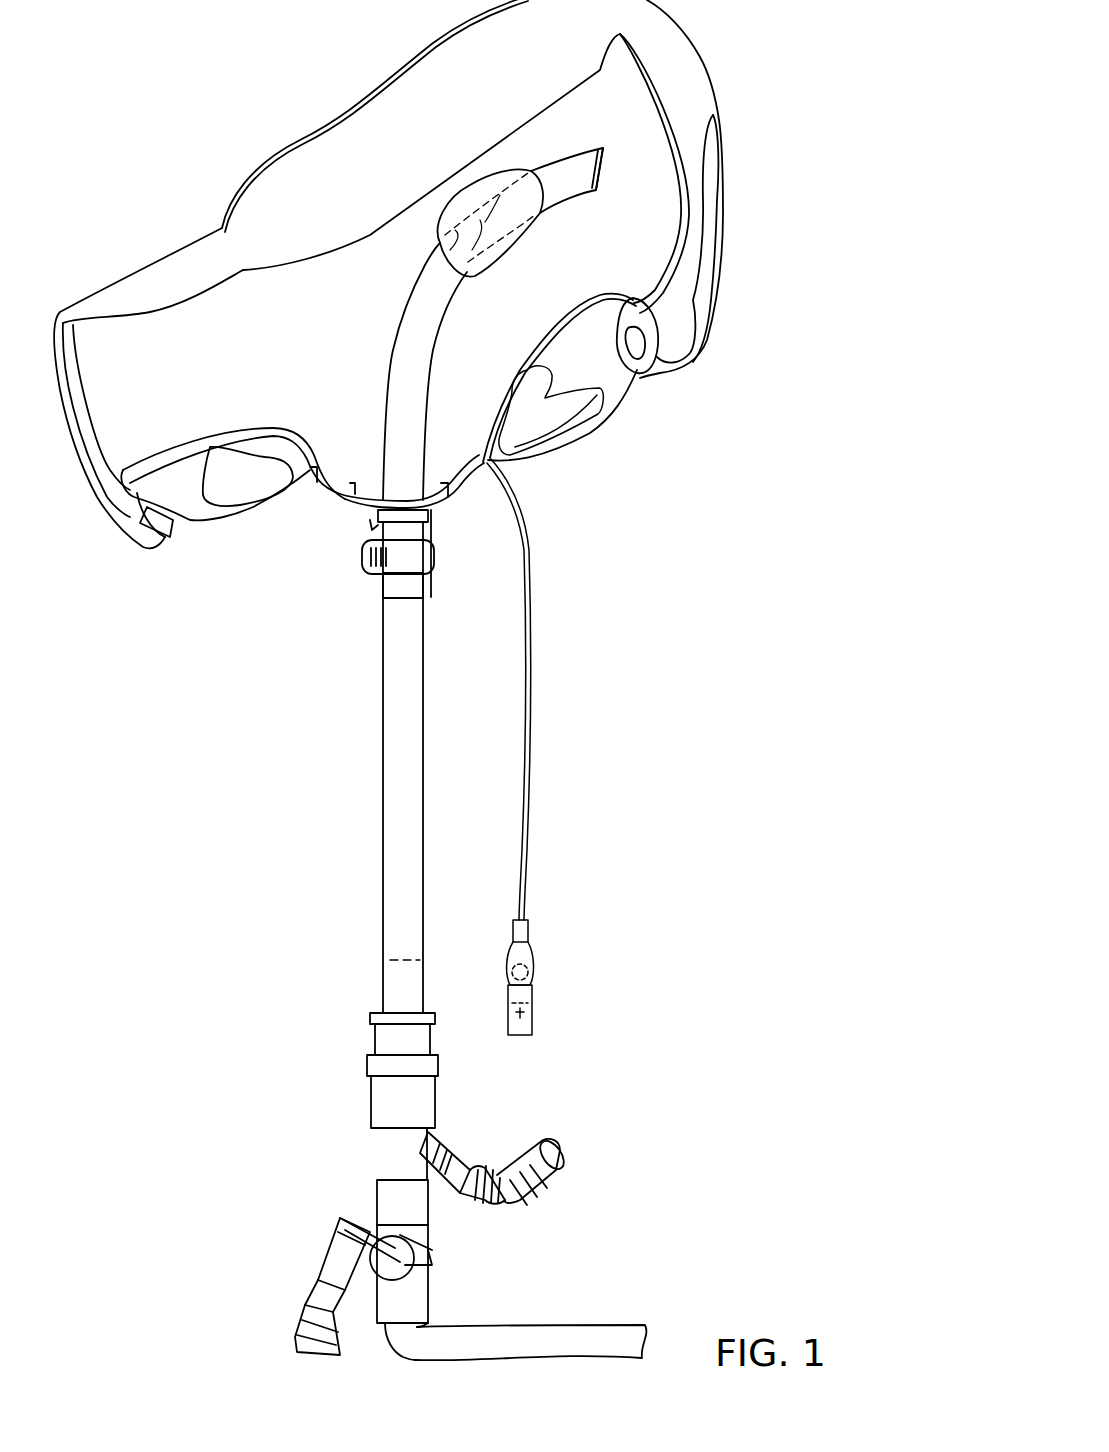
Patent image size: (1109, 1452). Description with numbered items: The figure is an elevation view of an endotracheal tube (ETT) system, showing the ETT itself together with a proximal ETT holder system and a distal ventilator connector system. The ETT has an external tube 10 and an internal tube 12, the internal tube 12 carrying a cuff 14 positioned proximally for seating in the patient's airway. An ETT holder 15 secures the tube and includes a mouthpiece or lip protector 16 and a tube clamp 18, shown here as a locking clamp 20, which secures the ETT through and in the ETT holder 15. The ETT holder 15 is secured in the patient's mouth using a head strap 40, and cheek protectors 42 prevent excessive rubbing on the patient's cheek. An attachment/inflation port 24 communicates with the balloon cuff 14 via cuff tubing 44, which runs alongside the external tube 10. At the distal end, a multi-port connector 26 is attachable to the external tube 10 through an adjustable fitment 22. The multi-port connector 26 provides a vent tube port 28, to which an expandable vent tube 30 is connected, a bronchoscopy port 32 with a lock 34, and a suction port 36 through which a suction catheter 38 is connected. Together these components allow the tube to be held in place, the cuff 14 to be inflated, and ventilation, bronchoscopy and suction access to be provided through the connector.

The external tube 10 is at (373, 680).
The internal tube 12 is at (430, 258).
The cuff 14 is at (515, 235).
The ETT holder 15 is at (728, 292).
The mouthpiece or lip protector 16 is at (353, 487).
The tube clamp 18 is at (438, 598).
The locking clamp 20 is at (360, 558).
The adjustable fitment 22 is at (362, 960).
The attachment/inflation port 24 is at (530, 990).
The multi-port connector 26 is at (437, 1068).
The vent tube port 28 is at (450, 1143).
The expandable vent tube 30 is at (518, 1200).
The bronchoscopy port 32 is at (290, 1222).
The lock 34 is at (395, 1250).
The suction port 36 is at (420, 1325).
The suction catheter 38 is at (640, 1325).
The head strap 40 is at (712, 135).
The cheek protectors 42 is at (613, 407).
The cuff tubing 44 is at (530, 703).